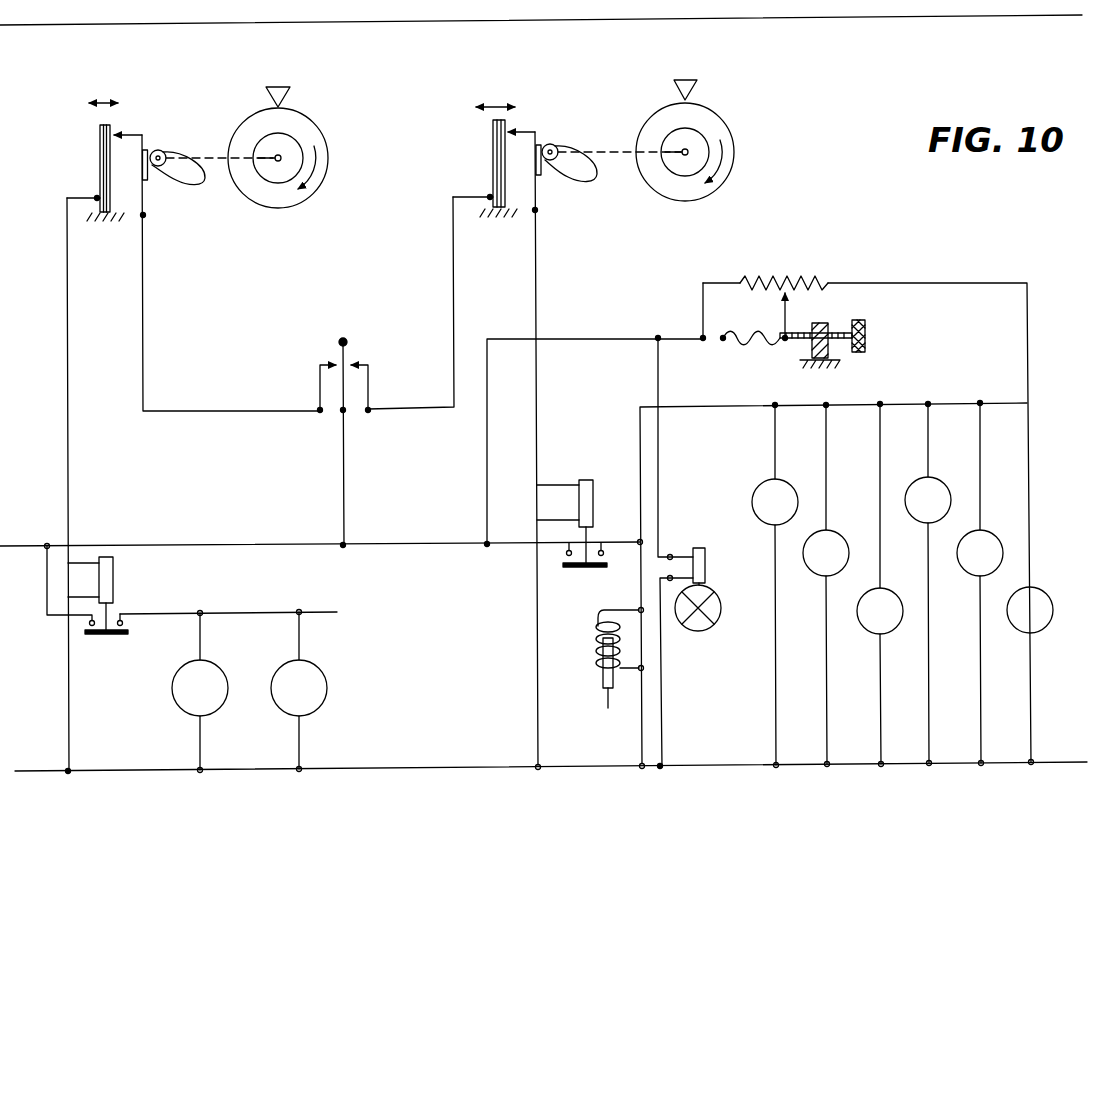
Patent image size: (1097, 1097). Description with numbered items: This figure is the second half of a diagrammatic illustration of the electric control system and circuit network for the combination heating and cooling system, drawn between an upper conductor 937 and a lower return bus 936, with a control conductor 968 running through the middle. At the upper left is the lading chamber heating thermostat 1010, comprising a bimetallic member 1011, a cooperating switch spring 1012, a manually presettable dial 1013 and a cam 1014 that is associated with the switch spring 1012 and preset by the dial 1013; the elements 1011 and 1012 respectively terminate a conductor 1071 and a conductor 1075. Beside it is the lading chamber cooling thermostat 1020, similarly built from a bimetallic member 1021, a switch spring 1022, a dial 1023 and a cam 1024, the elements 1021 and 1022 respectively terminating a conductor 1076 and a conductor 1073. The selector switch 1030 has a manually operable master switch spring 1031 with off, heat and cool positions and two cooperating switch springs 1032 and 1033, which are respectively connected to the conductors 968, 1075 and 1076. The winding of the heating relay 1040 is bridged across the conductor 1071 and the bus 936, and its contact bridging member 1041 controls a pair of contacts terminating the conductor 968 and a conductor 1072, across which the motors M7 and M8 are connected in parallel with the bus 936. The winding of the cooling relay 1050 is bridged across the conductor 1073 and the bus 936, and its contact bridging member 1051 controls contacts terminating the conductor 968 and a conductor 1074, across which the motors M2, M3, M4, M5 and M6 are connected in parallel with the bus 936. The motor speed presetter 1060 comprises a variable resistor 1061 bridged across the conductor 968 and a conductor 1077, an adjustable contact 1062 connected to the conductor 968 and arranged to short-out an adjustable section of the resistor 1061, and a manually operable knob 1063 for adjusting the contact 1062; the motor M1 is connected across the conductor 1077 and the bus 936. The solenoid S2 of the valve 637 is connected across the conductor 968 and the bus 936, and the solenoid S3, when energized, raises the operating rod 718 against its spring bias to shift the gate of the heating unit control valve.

The conductor 937 is at (71, 24).
The bus 936 is at (57, 771).
The conductor 968 is at (635, 338).
The lading chamber heating thermostat 1010 is at (320, 184).
The bimetallic member 1011 is at (100, 156).
The switch spring 1012 is at (135, 134).
The manually presettable dial 1013 is at (328, 155).
The cam 1014 is at (177, 179).
The lading chamber cooling thermostat 1020 is at (720, 114).
The bimetallic member 1021 is at (493, 151).
The switch spring 1022 is at (531, 131).
The manually presettable dial 1023 is at (733, 161).
The cam 1024 is at (587, 177).
The selector switch 1030 is at (353, 336).
The master switch spring 1031 is at (345, 396).
The switch spring 1032 is at (318, 383).
The switch spring 1033 is at (370, 383).
The heating relay 1040 is at (114, 572).
The contact bridging member 1041 is at (103, 636).
The cooling relay 1050 is at (591, 510).
The contact bridging member 1051 is at (588, 568).
The motor speed presetter 1060 is at (814, 265).
The variable resistor 1061 is at (773, 292).
The adjustable contact 1062 is at (790, 311).
The manually operable knob 1063 is at (867, 334).
The conductor 1071 is at (71, 313).
The conductor 1072 is at (320, 613).
The conductor 1073 is at (538, 269).
The conductor 1074 is at (1009, 403).
The conductor 1075 is at (146, 295).
The conductor 1076 is at (455, 269).
The conductor 1077 is at (945, 283).
The solenoid S2 is at (707, 580).
The solenoid S3 is at (600, 649).
The valve 637 is at (714, 612).
The operating rod 718 is at (606, 700).
The motor M1 is at (1030, 610).
The motor M2 is at (980, 583).
The motor M3 is at (928, 583).
The motor M4 is at (880, 584).
The motor M5 is at (826, 584).
The motor M6 is at (775, 585).
The motor M7 is at (200, 691).
The motor M8 is at (299, 690).